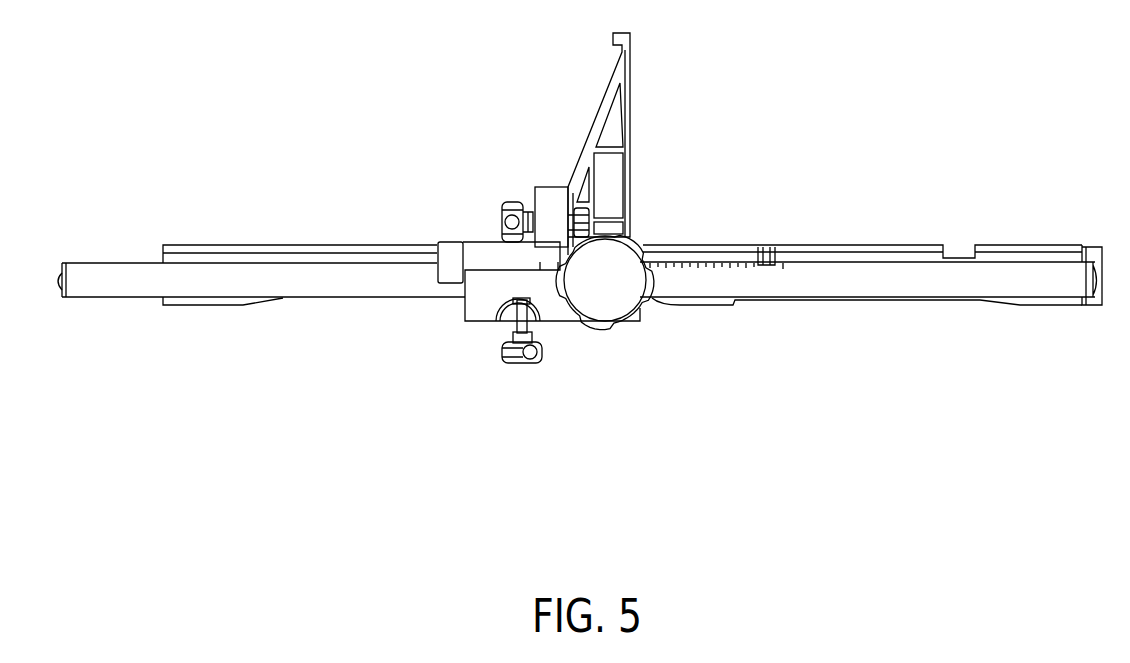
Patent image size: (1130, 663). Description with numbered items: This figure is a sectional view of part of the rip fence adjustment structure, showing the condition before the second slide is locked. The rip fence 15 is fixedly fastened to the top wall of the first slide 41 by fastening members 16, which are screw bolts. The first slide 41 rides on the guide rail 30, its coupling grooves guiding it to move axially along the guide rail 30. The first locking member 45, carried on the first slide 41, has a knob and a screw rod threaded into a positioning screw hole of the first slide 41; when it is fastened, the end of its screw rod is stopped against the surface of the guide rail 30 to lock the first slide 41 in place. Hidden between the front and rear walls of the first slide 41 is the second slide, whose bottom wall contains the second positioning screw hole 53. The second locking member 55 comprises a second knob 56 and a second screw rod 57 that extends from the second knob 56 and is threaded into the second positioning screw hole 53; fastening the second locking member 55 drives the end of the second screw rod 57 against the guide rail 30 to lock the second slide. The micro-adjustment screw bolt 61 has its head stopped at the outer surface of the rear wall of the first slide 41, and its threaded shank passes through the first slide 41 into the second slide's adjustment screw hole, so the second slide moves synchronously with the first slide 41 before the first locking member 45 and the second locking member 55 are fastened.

The rip fence 15 is at (623, 72).
The fastening member 16 is at (512, 203).
The guide rail 30 is at (1018, 278).
The first slide 41 is at (476, 232).
The first locking member 45 is at (647, 224).
The second positioning screw hole 53 is at (503, 302).
The second locking member 55 is at (460, 365).
The second knob 56 is at (520, 363).
The second screw rod 57 is at (517, 315).
The micro-adjustment screw bolt 61 is at (432, 233).